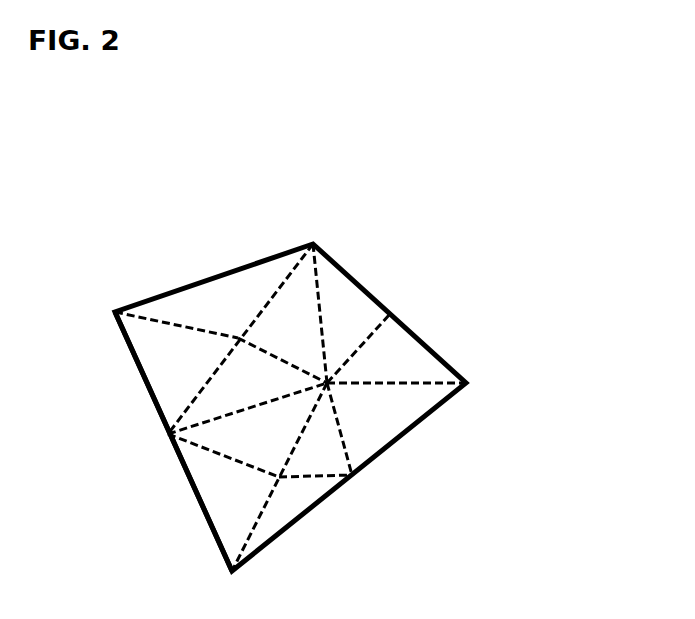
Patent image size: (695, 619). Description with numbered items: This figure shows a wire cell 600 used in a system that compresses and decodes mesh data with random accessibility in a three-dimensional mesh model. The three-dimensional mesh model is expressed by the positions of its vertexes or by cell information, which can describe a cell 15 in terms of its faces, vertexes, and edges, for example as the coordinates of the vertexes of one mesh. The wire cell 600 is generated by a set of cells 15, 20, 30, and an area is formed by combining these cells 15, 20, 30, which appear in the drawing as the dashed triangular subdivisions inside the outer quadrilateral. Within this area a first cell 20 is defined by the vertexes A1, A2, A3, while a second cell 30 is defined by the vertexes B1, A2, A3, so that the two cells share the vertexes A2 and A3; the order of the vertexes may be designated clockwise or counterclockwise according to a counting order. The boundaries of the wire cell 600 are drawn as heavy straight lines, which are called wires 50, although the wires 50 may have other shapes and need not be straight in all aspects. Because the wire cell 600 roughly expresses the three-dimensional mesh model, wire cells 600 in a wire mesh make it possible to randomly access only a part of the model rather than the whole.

The wire cell 600 is at (313, 189).
The wires 50 is at (133, 360).
The cell 15 is at (207, 493).
The first cell 20 is at (398, 360).
The second cell 30 is at (397, 417).
The vertex A1 is at (400, 299).
The vertex A2 is at (348, 397).
The vertex A3 is at (484, 385).
The vertex B1 is at (368, 486).